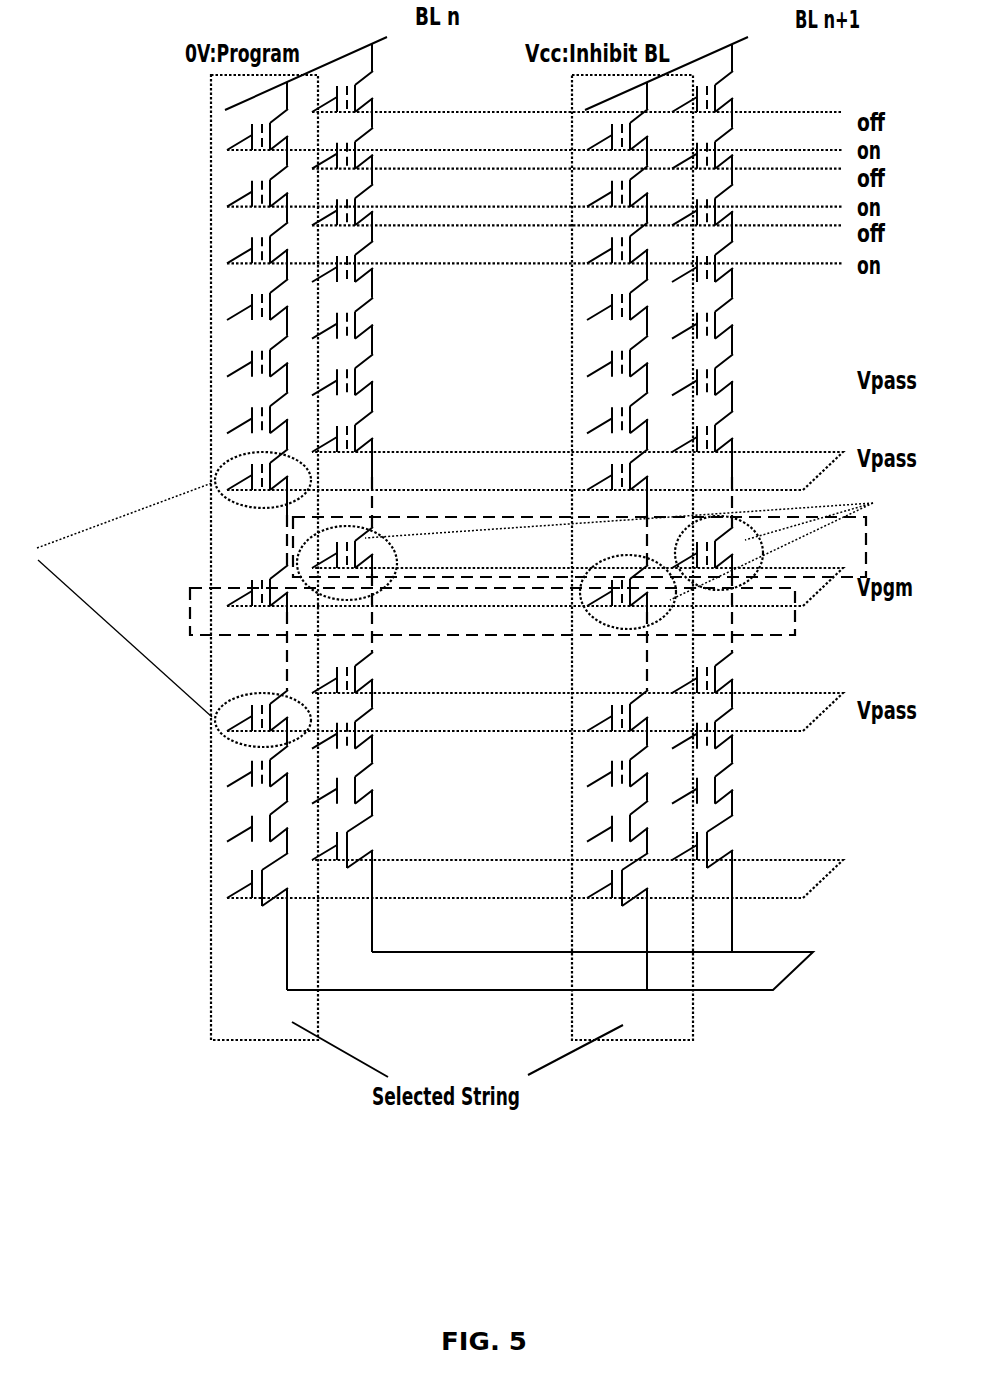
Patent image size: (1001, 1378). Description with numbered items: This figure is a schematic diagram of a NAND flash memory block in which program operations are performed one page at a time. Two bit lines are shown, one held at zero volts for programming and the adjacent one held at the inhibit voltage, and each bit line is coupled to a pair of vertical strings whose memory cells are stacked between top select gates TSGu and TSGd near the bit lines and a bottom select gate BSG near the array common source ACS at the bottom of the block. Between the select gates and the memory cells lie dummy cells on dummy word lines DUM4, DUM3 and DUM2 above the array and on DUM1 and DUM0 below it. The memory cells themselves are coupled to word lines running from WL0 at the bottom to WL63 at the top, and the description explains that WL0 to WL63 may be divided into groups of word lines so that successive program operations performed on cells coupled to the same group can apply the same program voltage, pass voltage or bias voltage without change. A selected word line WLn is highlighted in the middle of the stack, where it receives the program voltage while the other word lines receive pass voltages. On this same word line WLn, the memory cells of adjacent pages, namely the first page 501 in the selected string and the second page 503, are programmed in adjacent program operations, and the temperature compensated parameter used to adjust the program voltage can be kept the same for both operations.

The first page 501 is at (797, 628).
The second page 503 is at (868, 543).
The upper top select gate line TSGu is at (484, 158).
The lower top select gate line TSGd is at (484, 243).
The dummy word line 4 DUM4 is at (409, 299).
The dummy word line 3 DUM3 is at (409, 358).
The dummy word line 2 DUM2 is at (409, 414).
The word line 63 WL63 is at (482, 470).
The word line n WLn is at (488, 586).
The word line 0 WL0 is at (488, 712).
The dummy word line 1 DUM1 is at (409, 768).
The dummy word line 0 DUM0 is at (409, 824).
The bottom select gate line BSG is at (489, 879).
The array common source ACS is at (474, 972).